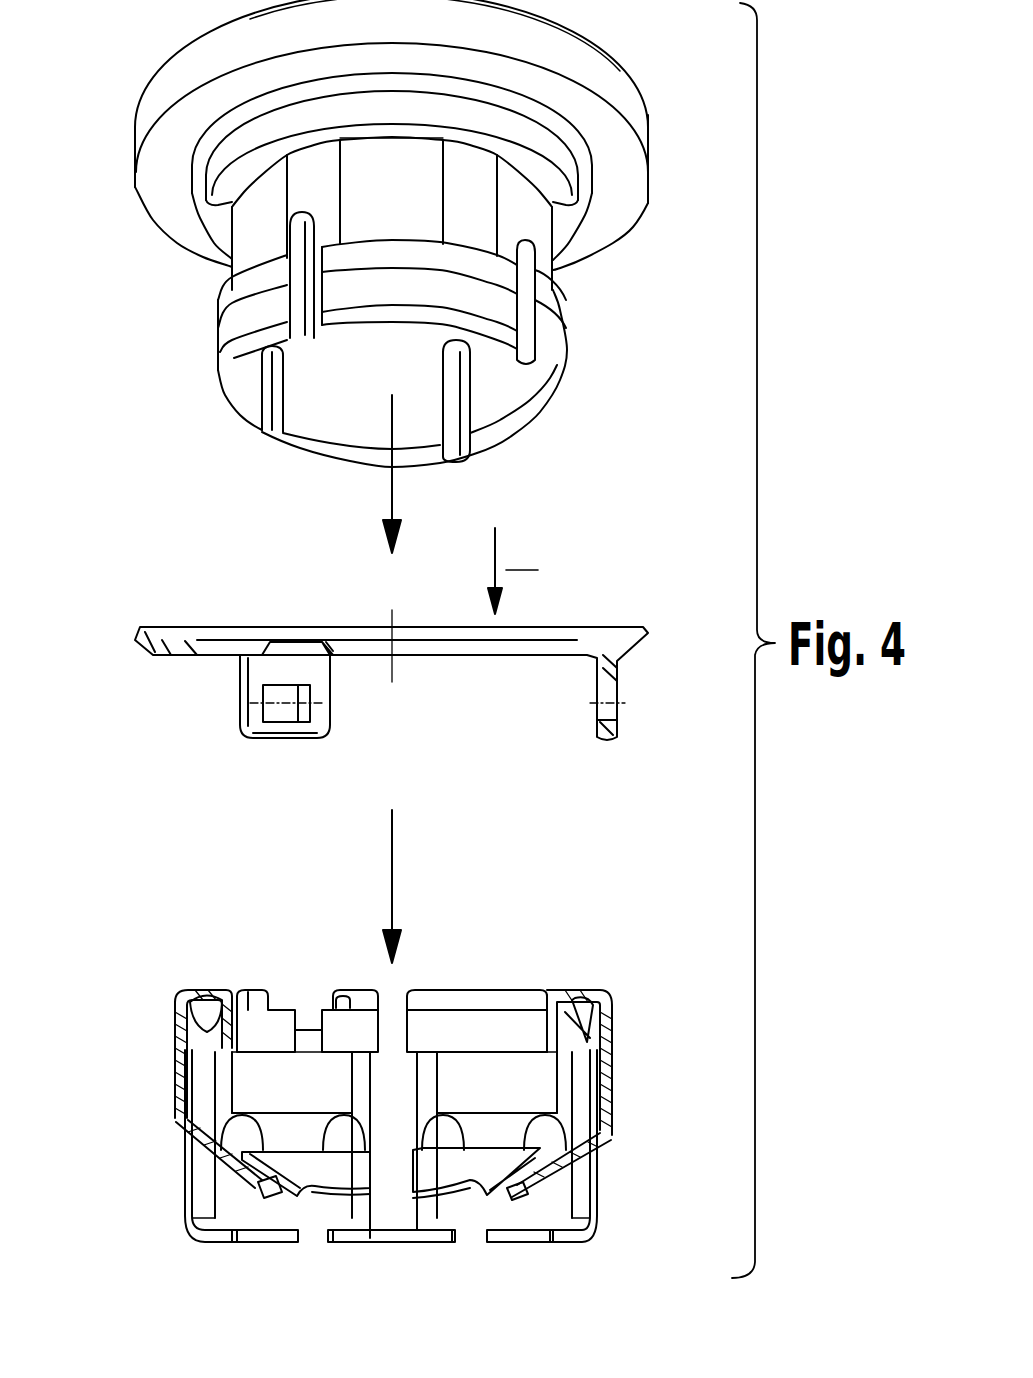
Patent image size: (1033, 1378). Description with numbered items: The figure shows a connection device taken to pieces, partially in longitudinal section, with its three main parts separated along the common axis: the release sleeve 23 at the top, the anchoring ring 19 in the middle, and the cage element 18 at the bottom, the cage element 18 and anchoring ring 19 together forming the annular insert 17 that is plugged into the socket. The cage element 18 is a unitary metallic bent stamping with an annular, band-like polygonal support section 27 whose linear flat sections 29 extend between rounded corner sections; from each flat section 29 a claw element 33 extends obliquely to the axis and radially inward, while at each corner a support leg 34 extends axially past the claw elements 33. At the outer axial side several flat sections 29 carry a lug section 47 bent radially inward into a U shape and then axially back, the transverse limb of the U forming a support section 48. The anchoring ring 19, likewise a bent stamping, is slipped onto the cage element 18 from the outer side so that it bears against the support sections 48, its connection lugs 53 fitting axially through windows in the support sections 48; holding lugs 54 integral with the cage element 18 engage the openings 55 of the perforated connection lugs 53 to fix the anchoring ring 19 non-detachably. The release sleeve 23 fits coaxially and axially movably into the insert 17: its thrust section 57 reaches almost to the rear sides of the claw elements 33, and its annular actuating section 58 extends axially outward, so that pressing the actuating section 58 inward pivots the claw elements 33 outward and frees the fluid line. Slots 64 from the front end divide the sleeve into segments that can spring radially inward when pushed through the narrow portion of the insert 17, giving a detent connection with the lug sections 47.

The insert 17 is at (92, 625).
The cage element 18 is at (634, 1100).
The anchoring ring 19 is at (603, 597).
The release sleeve 23 is at (176, 268).
The support section 27 is at (608, 1043).
The flat sections 29 is at (243, 1073).
The claw elements 33 is at (237, 1177).
The support legs 34 is at (197, 1203).
The lug section 47 is at (228, 990).
The support section 48 is at (203, 990).
The connection lugs 53 is at (325, 708).
The holding lugs 54 is at (303, 1035).
The openings 55 is at (255, 703).
The thrust section 57 is at (210, 384).
The actuating section 58 is at (620, 193).
The slots 64 is at (533, 323).